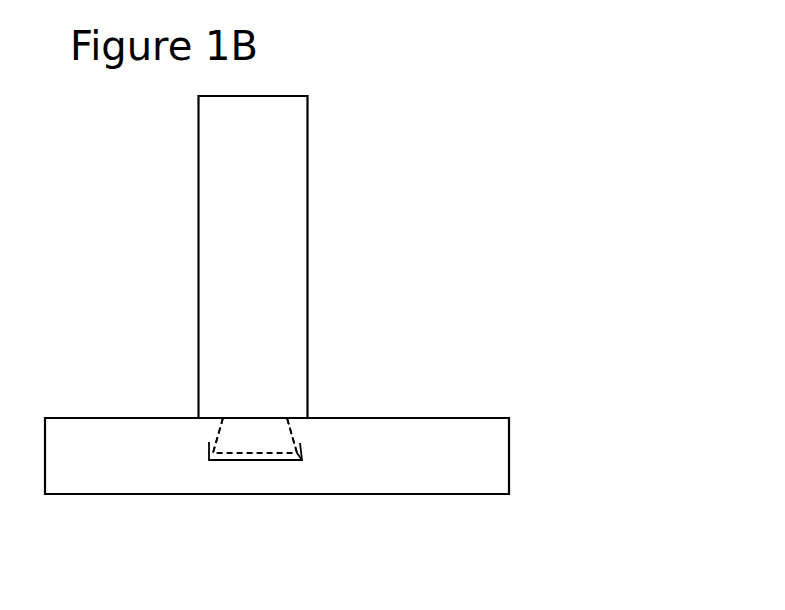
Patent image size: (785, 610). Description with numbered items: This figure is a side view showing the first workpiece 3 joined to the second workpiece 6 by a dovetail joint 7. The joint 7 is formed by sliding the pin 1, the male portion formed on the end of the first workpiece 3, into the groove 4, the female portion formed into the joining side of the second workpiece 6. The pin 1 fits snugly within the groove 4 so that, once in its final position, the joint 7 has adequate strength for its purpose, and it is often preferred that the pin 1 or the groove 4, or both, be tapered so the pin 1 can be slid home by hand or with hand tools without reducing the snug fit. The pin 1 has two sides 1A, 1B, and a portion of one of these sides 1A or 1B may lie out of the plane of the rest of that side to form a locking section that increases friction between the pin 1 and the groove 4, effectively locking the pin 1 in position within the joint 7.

The first workpiece 3 is at (227, 173).
The second workpiece 6 is at (455, 448).
The pin 1 is at (250, 423).
The side of pin 1A is at (215, 434).
The side of pin 1B is at (292, 438).
The groove 4 is at (300, 450).
The dovetail joint 7 is at (224, 478).